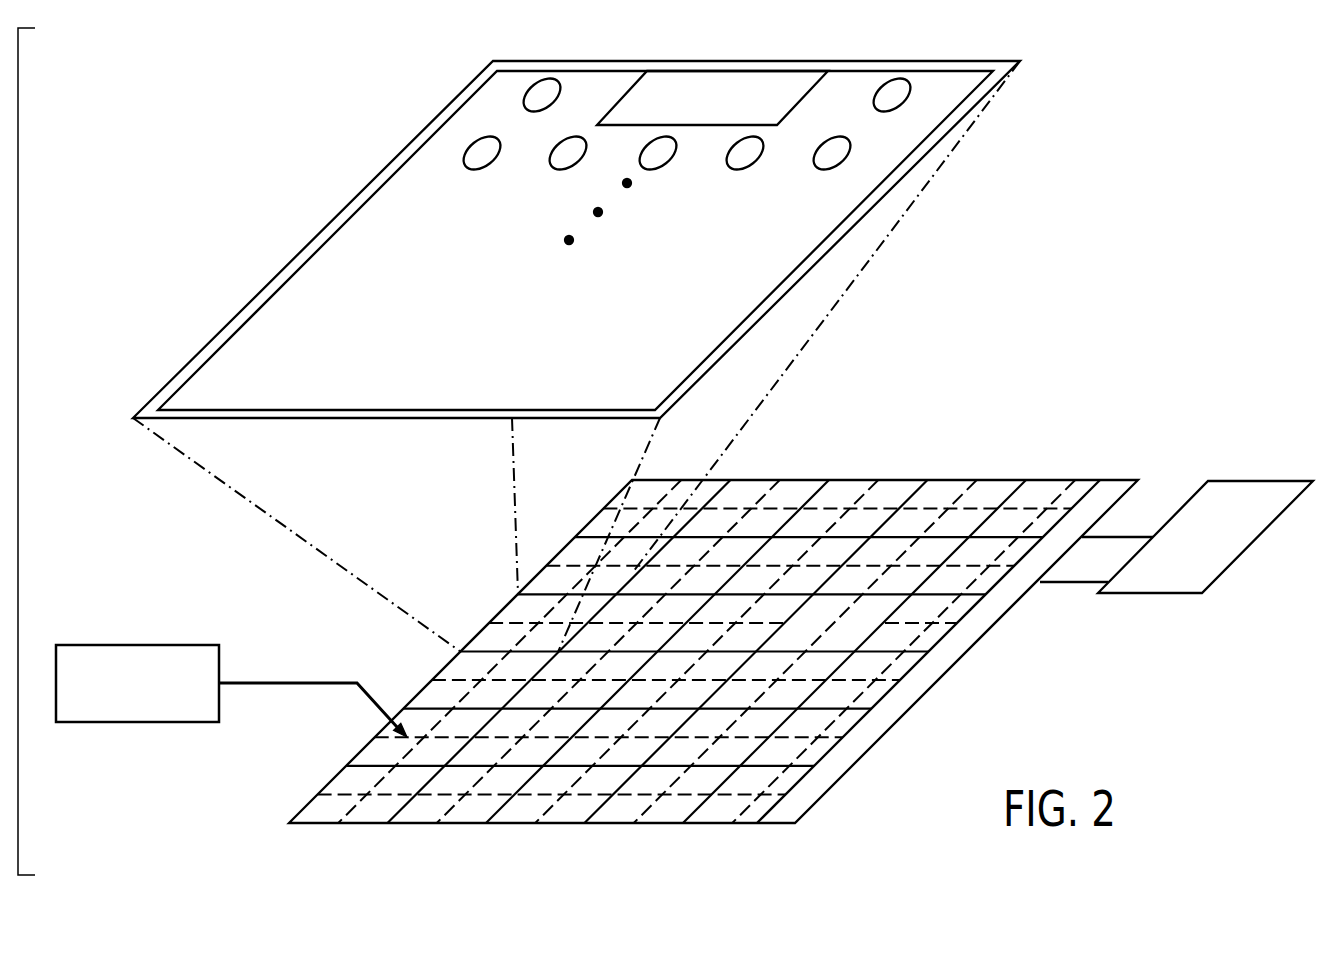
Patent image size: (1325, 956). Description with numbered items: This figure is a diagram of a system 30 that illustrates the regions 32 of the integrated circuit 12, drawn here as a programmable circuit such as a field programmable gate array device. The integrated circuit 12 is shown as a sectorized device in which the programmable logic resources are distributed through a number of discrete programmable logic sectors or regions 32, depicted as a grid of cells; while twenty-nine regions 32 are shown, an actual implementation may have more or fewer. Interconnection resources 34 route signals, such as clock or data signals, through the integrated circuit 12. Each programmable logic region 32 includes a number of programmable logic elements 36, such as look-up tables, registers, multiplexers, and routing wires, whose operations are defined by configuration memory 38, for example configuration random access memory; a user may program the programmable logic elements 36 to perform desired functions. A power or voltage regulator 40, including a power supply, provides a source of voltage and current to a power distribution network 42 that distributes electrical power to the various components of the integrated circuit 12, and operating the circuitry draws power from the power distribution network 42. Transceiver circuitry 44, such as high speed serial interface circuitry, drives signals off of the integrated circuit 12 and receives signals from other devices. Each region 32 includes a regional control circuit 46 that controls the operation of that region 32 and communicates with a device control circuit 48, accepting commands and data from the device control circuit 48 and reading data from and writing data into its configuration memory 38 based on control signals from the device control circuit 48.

The integrated circuit 12 is at (815, 622).
The system 30 is at (652, 420).
The regions 32 is at (650, 493).
The interconnection resources 34 is at (313, 238).
The programmable logic elements 36 is at (547, 80).
The configuration memory 38 is at (728, 130).
The power regulator 40 is at (137, 645).
The power distribution network 42 is at (367, 778).
The transceiver circuitry 44 is at (1257, 537).
The regional control circuit 46 is at (721, 74).
The device control circuit 48 is at (557, 824).